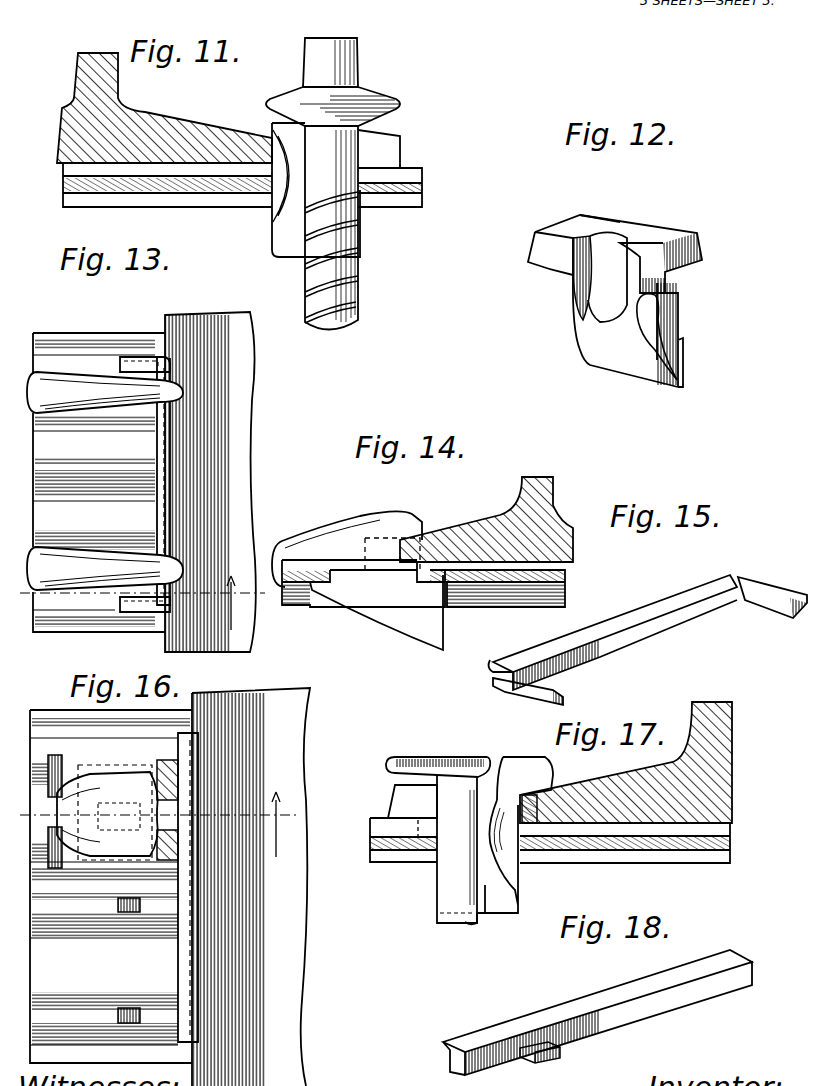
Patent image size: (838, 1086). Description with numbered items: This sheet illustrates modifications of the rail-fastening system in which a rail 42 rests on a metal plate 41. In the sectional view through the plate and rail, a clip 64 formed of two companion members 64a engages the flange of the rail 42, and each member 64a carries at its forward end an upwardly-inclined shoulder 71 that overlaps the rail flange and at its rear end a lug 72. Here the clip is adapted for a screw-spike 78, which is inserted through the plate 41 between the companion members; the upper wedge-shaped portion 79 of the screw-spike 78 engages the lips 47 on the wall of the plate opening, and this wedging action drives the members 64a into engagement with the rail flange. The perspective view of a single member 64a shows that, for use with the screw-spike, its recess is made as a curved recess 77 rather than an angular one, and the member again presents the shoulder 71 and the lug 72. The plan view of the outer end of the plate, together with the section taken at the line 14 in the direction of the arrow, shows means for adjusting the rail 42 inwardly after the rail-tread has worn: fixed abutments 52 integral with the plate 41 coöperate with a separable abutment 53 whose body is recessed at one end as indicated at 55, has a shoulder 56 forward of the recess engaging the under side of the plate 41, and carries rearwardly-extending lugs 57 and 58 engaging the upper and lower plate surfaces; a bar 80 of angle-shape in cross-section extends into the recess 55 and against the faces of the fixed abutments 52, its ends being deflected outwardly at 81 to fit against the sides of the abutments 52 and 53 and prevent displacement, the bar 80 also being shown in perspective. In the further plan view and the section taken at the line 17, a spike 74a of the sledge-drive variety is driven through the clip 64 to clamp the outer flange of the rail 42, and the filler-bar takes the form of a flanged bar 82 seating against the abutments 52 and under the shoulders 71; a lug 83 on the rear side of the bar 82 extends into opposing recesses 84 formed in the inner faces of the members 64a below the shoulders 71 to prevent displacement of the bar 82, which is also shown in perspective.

In FIG. 13, the section line 14 is at (142, 603).
In FIG. 16, the section line 17 is at (165, 824).
In FIG. 11, the plate 41 is at (220, 192).
In FIG. 13, the plate 41 is at (99, 482).
In FIG. 14, the plate 41 is at (523, 572).
In FIG. 16, the plate 41 is at (111, 886).
In FIG. 17, the plate 41 is at (663, 853).
In FIG. 11, the rail 42 is at (170, 128).
In FIG. 13, the rail 42 is at (210, 482).
In FIG. 14, the rail 42 is at (500, 522).
In FIG. 16, the rail 42 is at (292, 1003).
In FIG. 17, the rail 42 is at (727, 783).
In FIG. 11, the lip 47 is at (358, 195).
In FIG. 16, the fixed abutment 52 is at (138, 1018).
In FIG. 13, the separable abutment 53 is at (72, 393).
In FIG. 14, the separable abutment 53 is at (363, 584).
In FIG. 14, the recess 55 is at (412, 522).
In FIG. 14, the shoulder 56 is at (447, 607).
In FIG. 14, the lug 57 is at (288, 548).
In FIG. 14, the lug 58 is at (322, 590).
In FIG. 12, the clip-device 64 is at (665, 322).
In FIG. 16, the clip-device 64 is at (67, 857).
In FIG. 11, the clip member 64a is at (302, 202).
In FIG. 12, the clip member 64a is at (585, 318).
In FIG. 16, the clip member 64a is at (70, 770).
In FIG. 17, the clip member 64a is at (487, 916).
In FIG. 12, the shoulder 71 is at (702, 250).
In FIG. 17, the shoulder 71 is at (538, 775).
In FIG. 11, the lug 72 is at (392, 157).
In FIG. 12, the lug 72 is at (550, 248).
In FIG. 17, the lug 72 is at (408, 803).
In FIG. 16, the spike 74a is at (115, 812).
In FIG. 17, the spike 74a is at (457, 858).
In FIG. 11, the curved recess 77 is at (350, 172).
In FIG. 12, the curved recess 77 is at (605, 245).
In FIG. 11, the screw-spike 78 is at (347, 250).
In FIG. 11, the wedge-shaped portion 79 is at (355, 205).
In FIG. 13, the bar 80 is at (168, 488).
In FIG. 15, the bar 80 is at (635, 613).
In FIG. 13, the deflected end 81 is at (135, 357).
In FIG. 15, the deflected end 81 is at (768, 588).
In FIG. 16, the flanged bar 82 is at (195, 978).
In FIG. 17, the flanged bar 82 is at (522, 795).
In FIG. 18, the flanged bar 82 is at (516, 1022).
In FIG. 16, the lug 83 is at (152, 828).
In FIG. 18, the lug 83 is at (562, 1048).
In FIG. 16, the recess 84 is at (155, 788).
In FIG. 17, the recess 84 is at (515, 913).